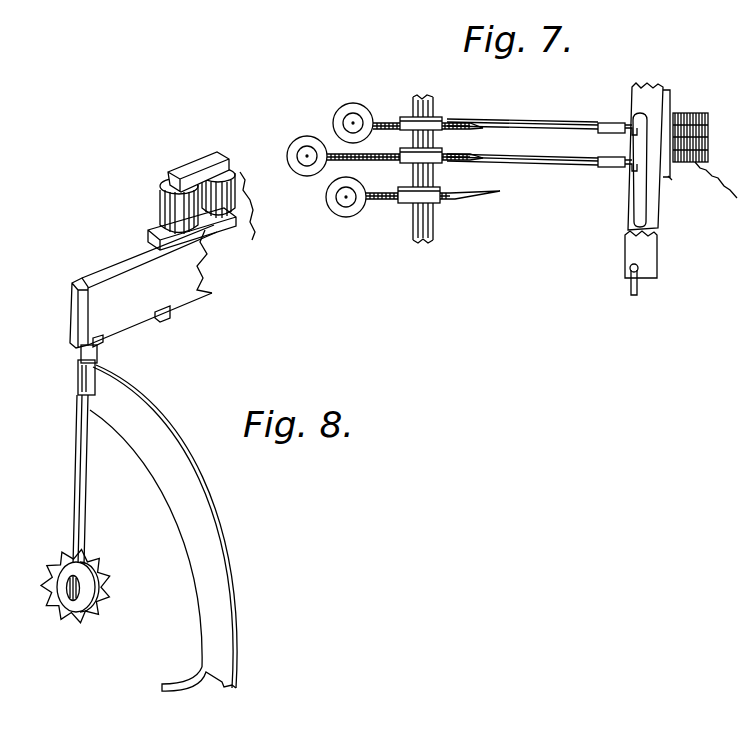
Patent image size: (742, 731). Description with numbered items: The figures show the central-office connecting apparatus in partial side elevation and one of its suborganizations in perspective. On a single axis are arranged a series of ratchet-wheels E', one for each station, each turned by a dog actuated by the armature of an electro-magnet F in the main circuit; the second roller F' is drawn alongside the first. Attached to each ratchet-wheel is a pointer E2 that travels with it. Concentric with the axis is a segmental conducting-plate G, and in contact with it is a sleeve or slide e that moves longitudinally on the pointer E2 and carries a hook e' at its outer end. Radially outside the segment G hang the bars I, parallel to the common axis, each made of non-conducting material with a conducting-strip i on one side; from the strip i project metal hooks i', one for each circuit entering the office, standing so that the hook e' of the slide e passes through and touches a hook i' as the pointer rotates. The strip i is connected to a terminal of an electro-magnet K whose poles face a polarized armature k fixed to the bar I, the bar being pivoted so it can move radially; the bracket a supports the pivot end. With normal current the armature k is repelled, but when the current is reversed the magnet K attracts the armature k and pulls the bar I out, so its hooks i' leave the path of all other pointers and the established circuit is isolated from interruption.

In FIG. 7, the electro-magnet F is at (353, 164).
In FIG. 7, the roller F' is at (290, 156).
In FIG. 7, the ratchet-wheel E' is at (413, 174).
In FIG. 8, the ratchet-wheel E' is at (84, 586).
In FIG. 7, the pointer E2 is at (540, 120).
In FIG. 8, the pointer E2 is at (110, 480).
In FIG. 7, the sleeve or slide e is at (617, 138).
In FIG. 8, the sleeve or slide e is at (92, 377).
In FIG. 7, the bar I is at (682, 216).
In FIG. 7, the hook i' is at (641, 170).
In FIG. 8, the hook i' is at (144, 318).
In FIG. 7, the electro-magnet K is at (690, 137).
In FIG. 8, the electro-magnet K is at (160, 214).
In FIG. 7, the polarized armature k is at (702, 180).
In FIG. 8, the polarized armature k is at (201, 219).
In FIG. 7, the bracket a is at (643, 258).
In FIG. 7, the conducting-strip i is at (638, 281).
In FIG. 8, the conducting-strip i is at (143, 286).
In FIG. 8, the hook e' is at (99, 349).
In FIG. 8, the segmental conducting-plate G is at (163, 528).